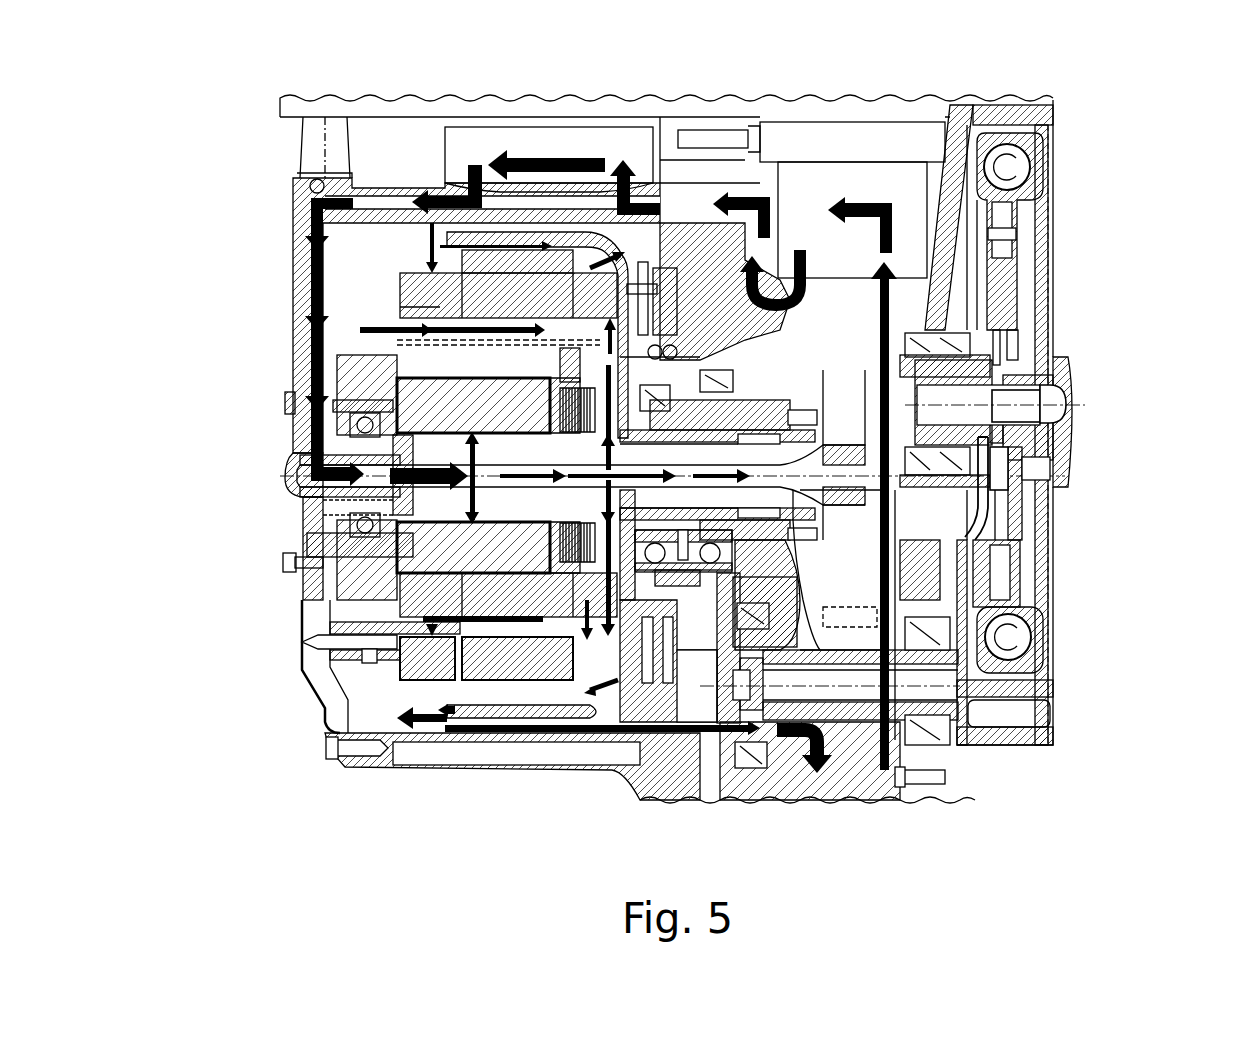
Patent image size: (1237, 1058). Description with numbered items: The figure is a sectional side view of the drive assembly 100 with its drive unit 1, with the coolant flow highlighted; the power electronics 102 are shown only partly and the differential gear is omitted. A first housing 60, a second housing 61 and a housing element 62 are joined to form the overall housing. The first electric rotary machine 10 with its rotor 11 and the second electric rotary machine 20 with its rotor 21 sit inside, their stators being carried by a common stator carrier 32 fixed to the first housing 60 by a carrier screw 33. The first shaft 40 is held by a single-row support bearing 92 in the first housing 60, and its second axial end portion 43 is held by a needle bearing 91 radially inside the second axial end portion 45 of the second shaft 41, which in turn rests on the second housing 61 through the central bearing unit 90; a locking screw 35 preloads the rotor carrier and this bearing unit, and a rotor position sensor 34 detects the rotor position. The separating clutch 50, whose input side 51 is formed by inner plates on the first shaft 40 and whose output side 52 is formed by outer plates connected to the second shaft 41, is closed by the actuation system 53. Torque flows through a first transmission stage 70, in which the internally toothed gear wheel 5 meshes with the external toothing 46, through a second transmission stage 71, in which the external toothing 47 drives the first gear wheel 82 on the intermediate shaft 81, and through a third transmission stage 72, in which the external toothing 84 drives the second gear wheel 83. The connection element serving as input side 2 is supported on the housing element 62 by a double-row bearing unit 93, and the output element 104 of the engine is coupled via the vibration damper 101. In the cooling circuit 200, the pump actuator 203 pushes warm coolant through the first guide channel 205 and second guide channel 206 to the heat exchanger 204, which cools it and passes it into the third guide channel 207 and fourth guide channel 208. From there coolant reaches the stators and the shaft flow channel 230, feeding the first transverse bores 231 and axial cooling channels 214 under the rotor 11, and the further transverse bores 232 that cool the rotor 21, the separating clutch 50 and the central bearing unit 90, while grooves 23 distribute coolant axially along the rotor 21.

The drive unit 1 is at (290, 156).
The input side 2 is at (1063, 390).
The internally toothed gear wheel 5 is at (1040, 537).
The first electric rotary machine 10 is at (300, 640).
The rotor of the first electric rotary machine 11 is at (335, 598).
The second electric rotary machine 20 is at (493, 738).
The rotor of the second electric rotary machine 21 is at (427, 757).
The grooves 23 is at (305, 220).
The common stator carrier 32 is at (345, 683).
The carrier screw 33 is at (328, 633).
The rotor position sensor 34 is at (678, 700).
The locking screw 35 is at (657, 672).
The first shaft 40 is at (305, 458).
The second shaft 41 is at (652, 722).
The second axial end portion of the first shaft 43 is at (1065, 420).
The second axial end portion of the second shaft 45 is at (1040, 558).
The external toothing 46 is at (835, 455).
The external toothing 47 is at (745, 405).
The separating clutch 50 is at (597, 733).
The input side of the separating clutch 51 is at (537, 737).
The output side of the separating clutch 52 is at (617, 723).
The actuation system 53 is at (655, 232).
The first housing 60 is at (318, 590).
The second housing 61 is at (677, 783).
The housing element 62 is at (1045, 723).
The first transmission stage 70 is at (1040, 512).
The second transmission stage 71 is at (1040, 582).
The third transmission stage 72 is at (1045, 718).
The intermediate shaft 81 is at (1040, 670).
The first gear wheel 82 is at (1040, 607).
The second gear wheel 83 is at (842, 753).
The external toothing of the intermediate shaft 84 is at (1040, 635).
The central bearing unit 90 is at (800, 775).
The needle bearing 91 is at (1050, 487).
The support bearing 92 is at (307, 430).
The double-row bearing unit 93 is at (1050, 342).
The drive assembly 100 is at (1086, 85).
The vibration damper 101 is at (1040, 166).
The power electronics 102 is at (283, 104).
The output element 104 is at (1068, 363).
The coolant circuit 200 is at (283, 333).
The pump actuator 203 is at (812, 148).
The heat exchanger 204 is at (530, 135).
The first guide channel 205 is at (1040, 287).
The second guide channel 206 is at (600, 215).
The third guide channel 207 is at (440, 178).
The fourth guide channel 208 is at (305, 267).
The axial cooling channels 214 is at (298, 405).
The shaft flow channel 230 is at (308, 482).
The first transverse bores 231 is at (292, 549).
The further transverse bores 232 is at (340, 510).